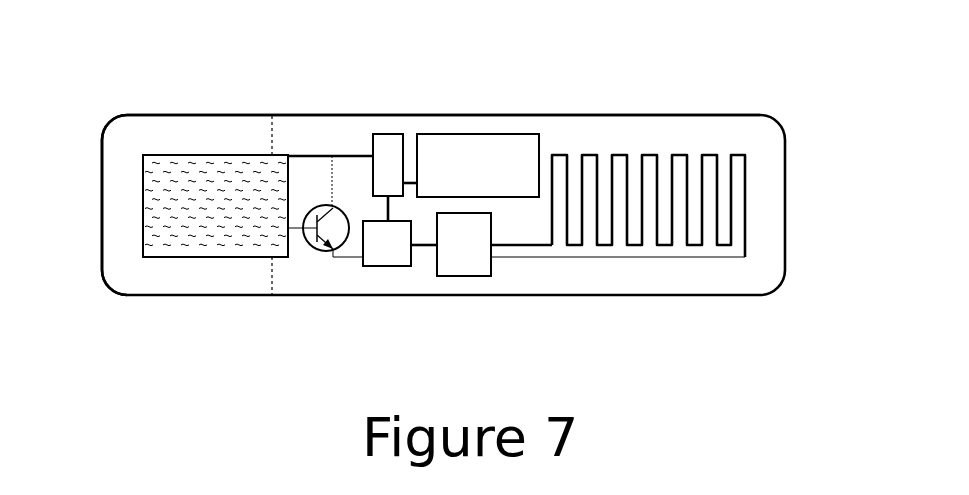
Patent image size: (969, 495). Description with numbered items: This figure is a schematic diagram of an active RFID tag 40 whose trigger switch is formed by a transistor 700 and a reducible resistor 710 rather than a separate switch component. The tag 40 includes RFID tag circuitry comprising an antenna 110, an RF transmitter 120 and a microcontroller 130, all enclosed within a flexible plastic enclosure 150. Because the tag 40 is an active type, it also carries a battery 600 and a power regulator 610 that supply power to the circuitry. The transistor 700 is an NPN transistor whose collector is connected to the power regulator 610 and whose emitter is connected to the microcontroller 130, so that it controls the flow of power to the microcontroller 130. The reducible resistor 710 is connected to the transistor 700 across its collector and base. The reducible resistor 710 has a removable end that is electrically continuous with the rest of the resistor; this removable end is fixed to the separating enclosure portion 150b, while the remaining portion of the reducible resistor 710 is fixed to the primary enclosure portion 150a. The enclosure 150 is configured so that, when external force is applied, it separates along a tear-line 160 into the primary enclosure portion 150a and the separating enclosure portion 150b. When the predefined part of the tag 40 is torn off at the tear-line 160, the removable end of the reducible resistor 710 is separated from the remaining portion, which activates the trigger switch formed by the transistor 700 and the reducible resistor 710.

The tag 40 is at (604, 88).
The antenna 110 is at (748, 183).
The RF transmitter 120 is at (467, 277).
The microcontroller 130 is at (388, 267).
The enclosure 150 is at (590, 296).
The primary enclosure portion 150a is at (333, 114).
The separating enclosure portion 150b is at (126, 112).
The tear-line 160 is at (266, 277).
The battery 600 is at (479, 133).
The power regulator 610 is at (388, 133).
The transistor 700 is at (318, 253).
The reducible resistor 710 is at (238, 153).